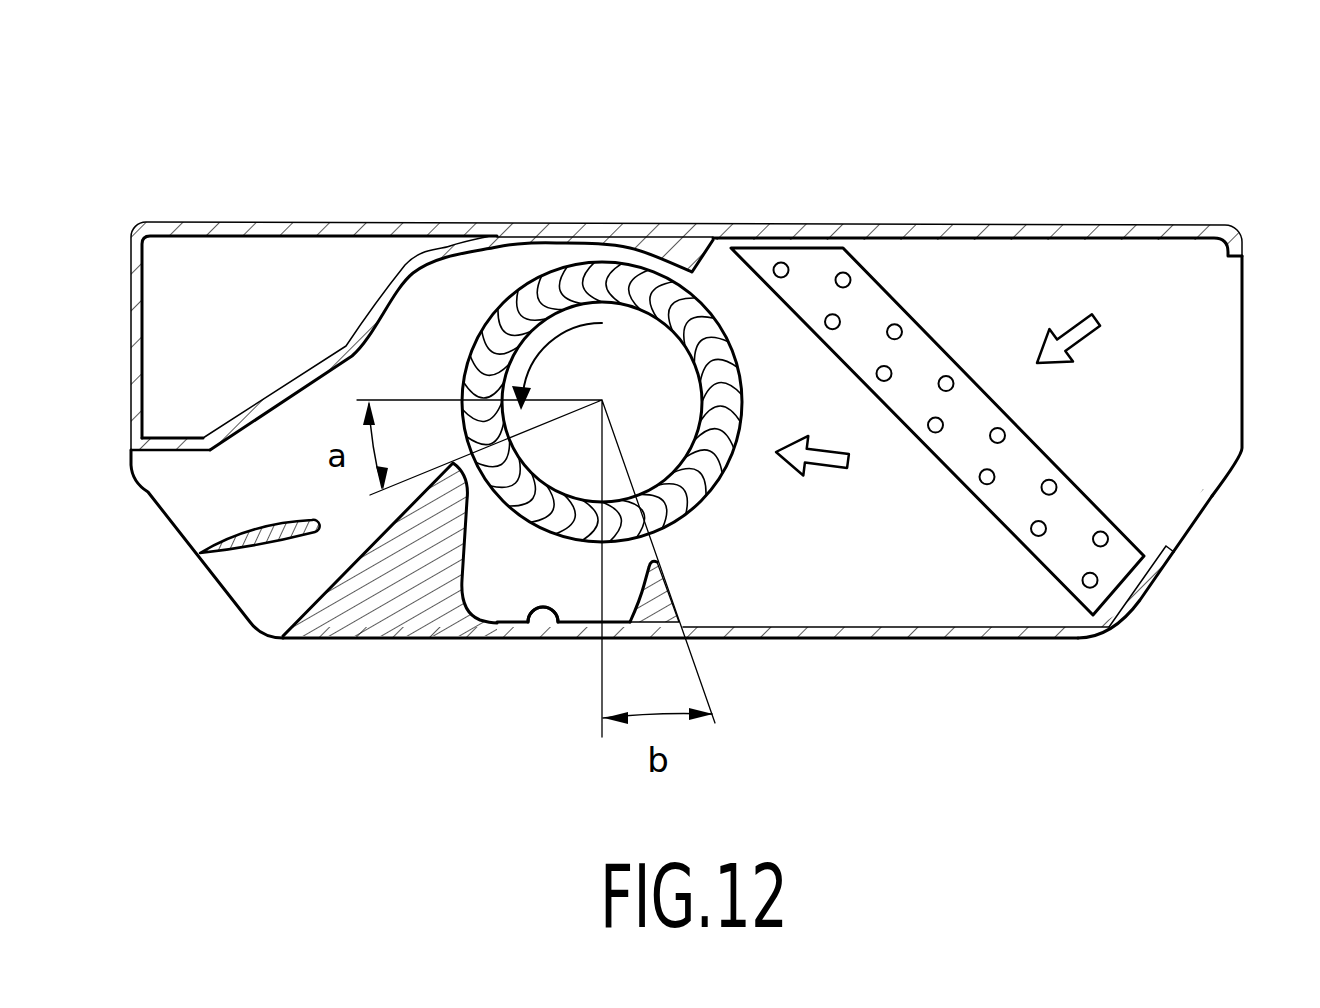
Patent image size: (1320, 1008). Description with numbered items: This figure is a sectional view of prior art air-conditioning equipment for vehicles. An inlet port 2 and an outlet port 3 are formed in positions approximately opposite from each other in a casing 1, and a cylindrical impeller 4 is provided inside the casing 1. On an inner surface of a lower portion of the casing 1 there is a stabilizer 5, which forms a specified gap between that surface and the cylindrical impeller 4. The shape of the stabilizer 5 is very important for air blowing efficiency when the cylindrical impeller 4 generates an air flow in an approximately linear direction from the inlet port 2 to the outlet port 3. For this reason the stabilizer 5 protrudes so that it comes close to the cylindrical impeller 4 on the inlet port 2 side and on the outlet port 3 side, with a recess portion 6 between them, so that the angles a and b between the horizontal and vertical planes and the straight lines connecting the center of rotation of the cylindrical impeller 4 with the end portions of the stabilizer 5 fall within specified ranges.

The casing 1 is at (877, 233).
The inlet port 2 is at (1200, 513).
The outlet port 3 is at (263, 607).
The cylindrical impeller 4 is at (717, 483).
The stabilizer 5 is at (470, 625).
The recess portion 6 is at (523, 633).